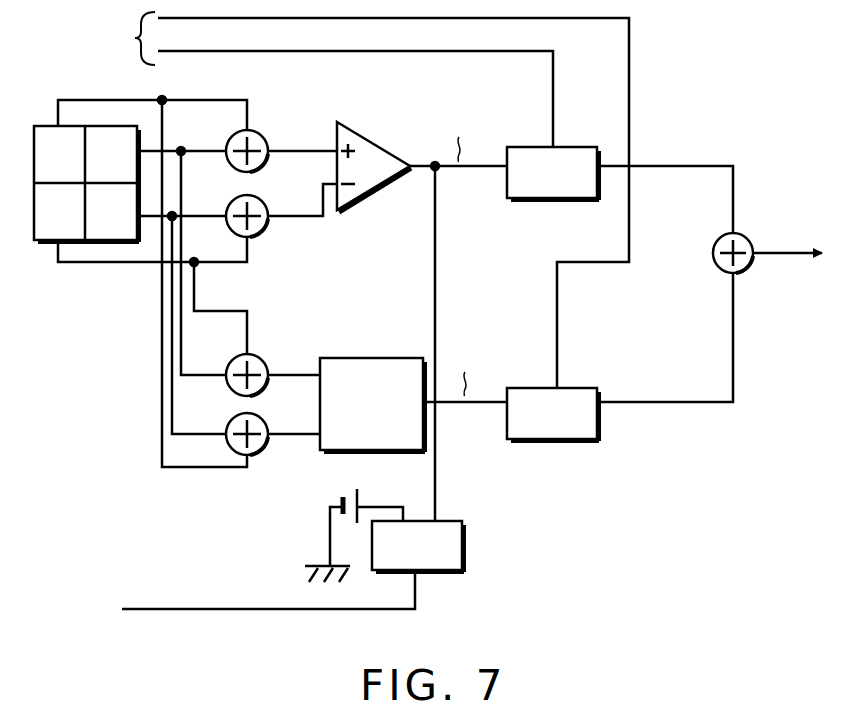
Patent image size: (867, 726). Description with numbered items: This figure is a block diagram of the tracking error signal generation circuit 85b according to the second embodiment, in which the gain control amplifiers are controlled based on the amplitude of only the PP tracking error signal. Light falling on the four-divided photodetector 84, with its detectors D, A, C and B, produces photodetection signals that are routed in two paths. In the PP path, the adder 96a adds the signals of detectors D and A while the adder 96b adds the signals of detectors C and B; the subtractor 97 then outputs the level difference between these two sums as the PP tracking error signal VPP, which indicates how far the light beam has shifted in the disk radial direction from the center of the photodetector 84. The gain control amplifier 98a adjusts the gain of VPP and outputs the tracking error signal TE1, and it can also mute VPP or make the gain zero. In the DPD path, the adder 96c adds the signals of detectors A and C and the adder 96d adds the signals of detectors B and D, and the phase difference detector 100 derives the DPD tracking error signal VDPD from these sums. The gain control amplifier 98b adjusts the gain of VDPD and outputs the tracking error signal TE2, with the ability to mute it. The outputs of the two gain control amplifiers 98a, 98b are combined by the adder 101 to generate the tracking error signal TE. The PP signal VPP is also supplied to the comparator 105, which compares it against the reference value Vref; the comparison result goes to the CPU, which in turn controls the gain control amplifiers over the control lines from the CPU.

The photodetector 84 is at (46, 257).
The tracking error signal generation circuit 85b is at (505, 254).
The adder 96a is at (280, 116).
The adder 96b is at (262, 231).
The adder 96c is at (262, 360).
The adder 96d is at (258, 452).
The subtractor 97 is at (372, 193).
The gain control amplifier 98a is at (585, 146).
The gain control amplifier 98b is at (580, 387).
The phase difference detector 100 is at (383, 357).
The adder 101 is at (746, 269).
The comparator 105 is at (464, 545).